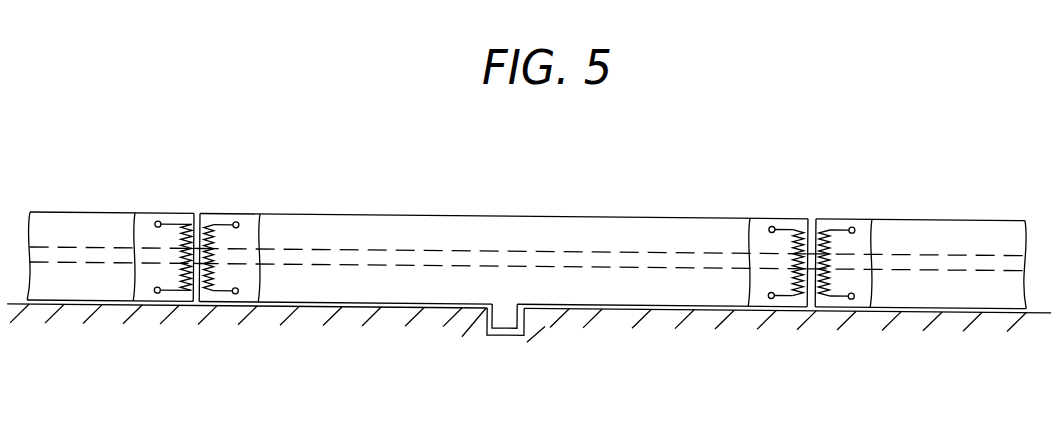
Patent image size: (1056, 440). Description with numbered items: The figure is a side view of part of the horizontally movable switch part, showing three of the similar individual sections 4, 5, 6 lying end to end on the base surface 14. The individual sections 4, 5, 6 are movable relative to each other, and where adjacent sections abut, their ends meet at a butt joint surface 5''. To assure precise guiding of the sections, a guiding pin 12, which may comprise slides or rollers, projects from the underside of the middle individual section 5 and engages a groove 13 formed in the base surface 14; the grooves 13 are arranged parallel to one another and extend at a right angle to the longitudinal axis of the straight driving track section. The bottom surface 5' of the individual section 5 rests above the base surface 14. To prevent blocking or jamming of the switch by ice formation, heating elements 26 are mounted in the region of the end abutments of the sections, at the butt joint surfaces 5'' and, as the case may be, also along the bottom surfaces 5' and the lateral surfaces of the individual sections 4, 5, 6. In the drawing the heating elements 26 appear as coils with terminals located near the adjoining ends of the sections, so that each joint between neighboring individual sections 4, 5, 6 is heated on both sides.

The individual section 4 is at (107, 225).
The individual section 5 is at (503, 233).
The individual section 6 is at (928, 232).
The heating element 26 is at (168, 293).
The butt joint surface 5'' is at (229, 297).
The bottom surface 5' is at (503, 341).
The guiding pin 12 is at (502, 318).
The groove 13 is at (510, 333).
The base surface 14 is at (668, 308).